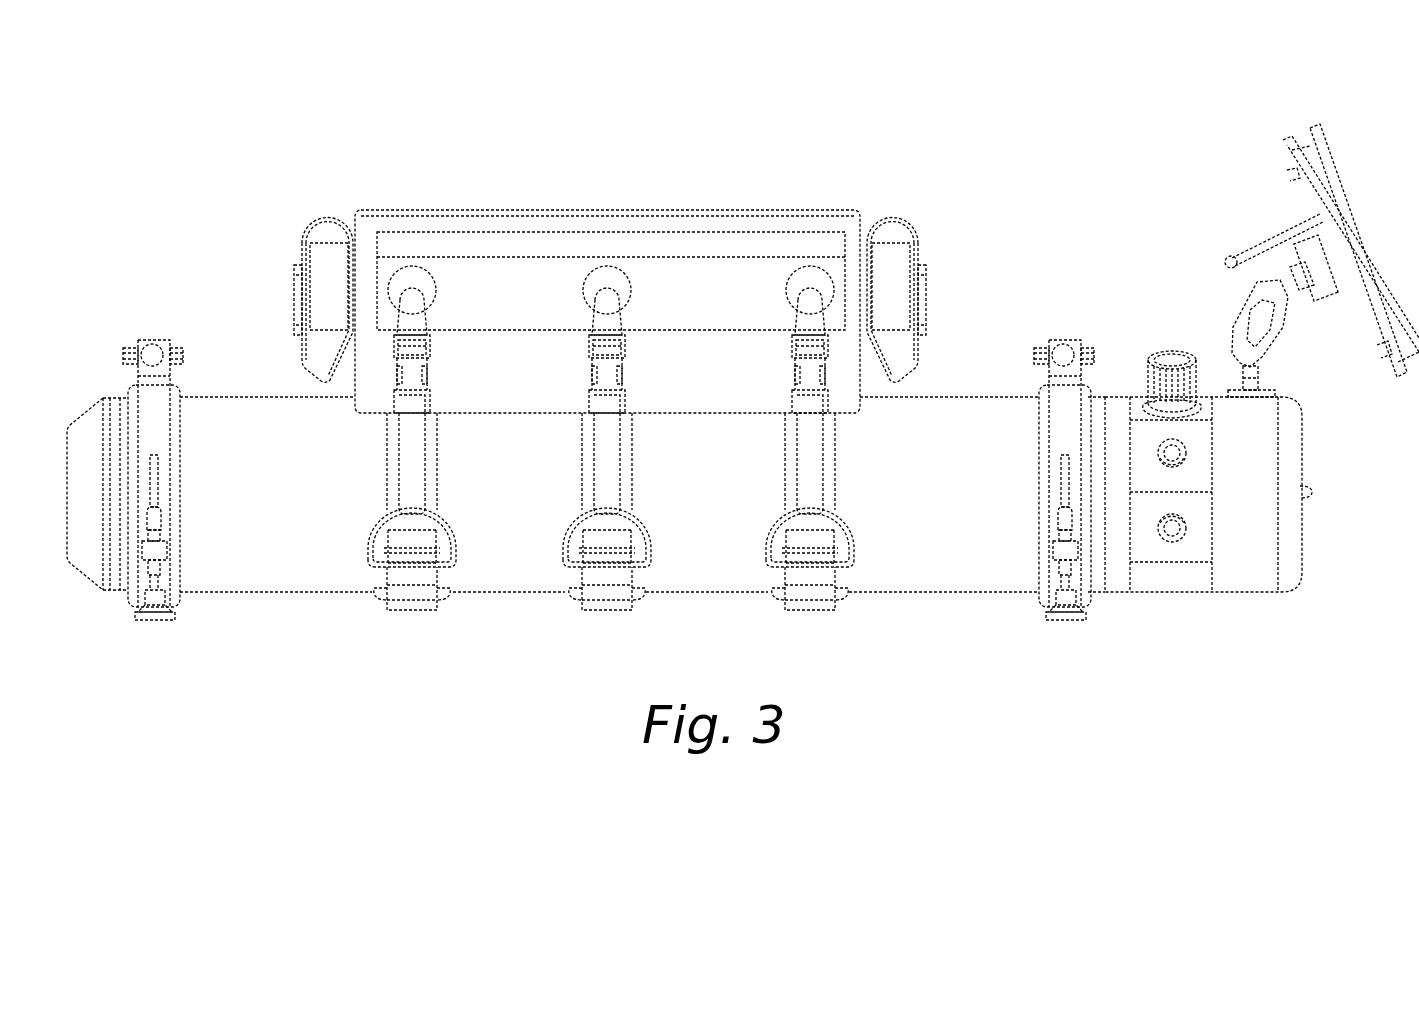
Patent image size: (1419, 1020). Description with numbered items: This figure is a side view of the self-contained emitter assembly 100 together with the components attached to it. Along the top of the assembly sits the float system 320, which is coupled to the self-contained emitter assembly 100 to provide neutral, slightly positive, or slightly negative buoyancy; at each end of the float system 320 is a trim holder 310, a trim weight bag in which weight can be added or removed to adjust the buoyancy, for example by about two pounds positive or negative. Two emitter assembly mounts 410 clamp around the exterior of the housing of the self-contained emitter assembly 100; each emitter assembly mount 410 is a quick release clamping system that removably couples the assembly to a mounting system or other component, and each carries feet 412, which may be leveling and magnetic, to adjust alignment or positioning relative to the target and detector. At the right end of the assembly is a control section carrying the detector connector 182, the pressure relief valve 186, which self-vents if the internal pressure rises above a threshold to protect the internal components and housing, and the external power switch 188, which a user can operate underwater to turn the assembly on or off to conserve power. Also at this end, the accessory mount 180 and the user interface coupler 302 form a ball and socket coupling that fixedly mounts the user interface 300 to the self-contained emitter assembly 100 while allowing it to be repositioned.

The self-contained emitter assembly 100 is at (947, 592).
The accessory mount 180 is at (1258, 382).
The detector connector 182 is at (1170, 352).
The pressure relief valve 186 is at (1172, 545).
The external power switch 188 is at (1306, 493).
The user interface 300 is at (1343, 177).
The user interface coupler 302 is at (1265, 355).
The trim holder 310 is at (303, 232).
The float system 320 is at (583, 210).
The emitter assembly mount 410 is at (184, 350).
The feet 412 is at (155, 620).